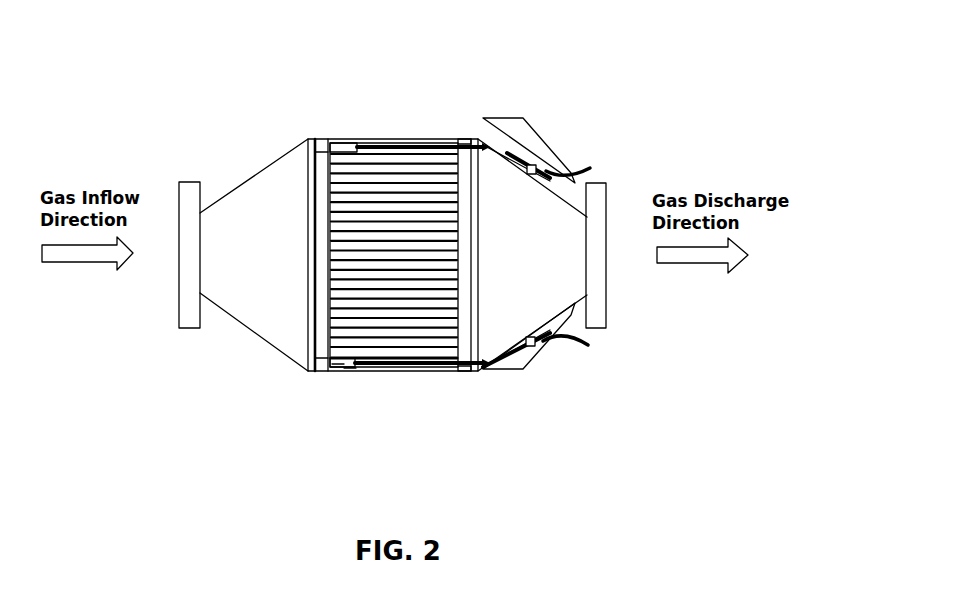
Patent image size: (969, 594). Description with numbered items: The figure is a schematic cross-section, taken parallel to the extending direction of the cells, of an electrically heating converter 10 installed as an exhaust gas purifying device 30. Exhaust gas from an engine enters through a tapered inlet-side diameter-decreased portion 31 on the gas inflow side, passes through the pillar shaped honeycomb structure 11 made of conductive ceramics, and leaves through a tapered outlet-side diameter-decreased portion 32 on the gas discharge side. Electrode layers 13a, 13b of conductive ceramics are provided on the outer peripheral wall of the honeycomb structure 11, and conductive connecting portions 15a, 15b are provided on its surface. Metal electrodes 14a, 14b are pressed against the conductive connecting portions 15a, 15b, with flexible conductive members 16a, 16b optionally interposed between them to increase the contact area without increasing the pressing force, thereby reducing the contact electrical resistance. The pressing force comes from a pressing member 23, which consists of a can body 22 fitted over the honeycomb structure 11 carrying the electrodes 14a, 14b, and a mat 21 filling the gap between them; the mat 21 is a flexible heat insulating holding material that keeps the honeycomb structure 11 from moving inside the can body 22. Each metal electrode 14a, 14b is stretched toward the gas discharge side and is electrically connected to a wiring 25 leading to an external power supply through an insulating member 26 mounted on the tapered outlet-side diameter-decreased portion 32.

The electrically heating converter 10 is at (396, 134).
The pillar shaped honeycomb structure 11 is at (328, 287).
The electrode layer 13a is at (330, 139).
The electrode layer 13b is at (328, 375).
The metal electrode 14a is at (466, 140).
The metal electrode 14b is at (469, 371).
The conductive connecting portion 15a is at (427, 147).
The conductive connecting portion 15b is at (445, 364).
The flexible conductive member 16a is at (365, 142).
The flexible conductive member 16b is at (385, 368).
The mat 21 is at (338, 366).
The can body 22 is at (350, 372).
The pressing member 23 is at (377, 447).
The wiring 25 is at (585, 165).
The insulating member 26 is at (533, 178).
The exhaust gas purifying device 30 is at (556, 80).
The tapered inlet-side diameter-decreased portion 31 is at (253, 175).
The tapered outlet-side diameter-decreased portion 32 is at (550, 228).